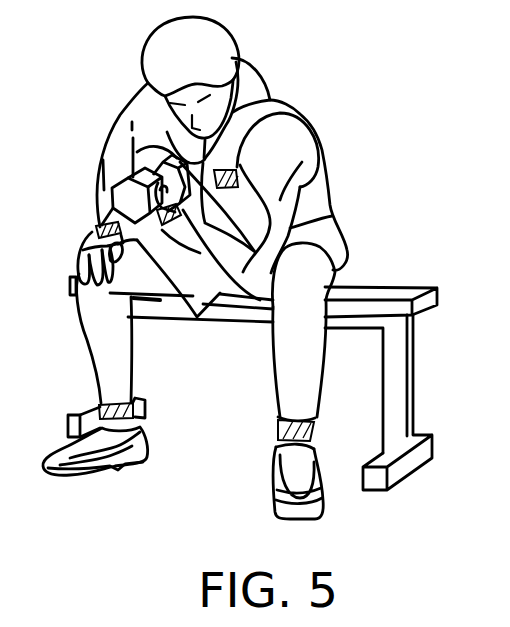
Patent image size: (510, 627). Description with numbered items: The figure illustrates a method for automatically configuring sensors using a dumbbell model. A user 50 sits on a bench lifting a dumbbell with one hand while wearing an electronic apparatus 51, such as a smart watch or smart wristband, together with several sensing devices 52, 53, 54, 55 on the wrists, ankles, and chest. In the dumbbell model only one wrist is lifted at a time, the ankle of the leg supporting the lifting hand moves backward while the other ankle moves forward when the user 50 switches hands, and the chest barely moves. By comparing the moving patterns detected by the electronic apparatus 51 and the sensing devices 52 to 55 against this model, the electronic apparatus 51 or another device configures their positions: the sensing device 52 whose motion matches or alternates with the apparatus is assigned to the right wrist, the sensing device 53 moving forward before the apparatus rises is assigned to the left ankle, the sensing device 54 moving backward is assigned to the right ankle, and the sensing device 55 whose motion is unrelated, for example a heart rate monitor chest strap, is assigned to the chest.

The user 50 is at (319, 189).
The electronic apparatus 51 is at (147, 220).
The sensing device 52 is at (99, 232).
The sensing device 53 is at (279, 428).
The sensing device 54 is at (99, 408).
The sensing device 55 is at (234, 177).